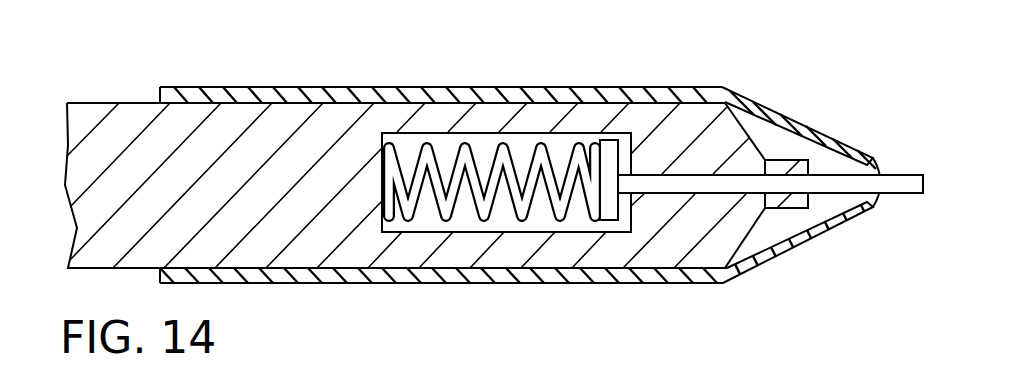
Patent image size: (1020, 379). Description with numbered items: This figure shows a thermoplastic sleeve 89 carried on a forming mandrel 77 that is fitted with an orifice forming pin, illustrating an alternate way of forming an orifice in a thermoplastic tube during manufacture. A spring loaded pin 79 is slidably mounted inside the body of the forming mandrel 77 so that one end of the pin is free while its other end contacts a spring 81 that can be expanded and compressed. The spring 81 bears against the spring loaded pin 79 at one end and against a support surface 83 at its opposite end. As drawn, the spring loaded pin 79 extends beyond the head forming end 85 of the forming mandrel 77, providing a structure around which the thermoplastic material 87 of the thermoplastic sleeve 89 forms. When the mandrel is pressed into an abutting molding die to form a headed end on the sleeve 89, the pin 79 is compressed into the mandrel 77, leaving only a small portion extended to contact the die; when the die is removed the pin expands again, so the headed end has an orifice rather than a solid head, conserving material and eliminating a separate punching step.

The forming mandrel 77 is at (120, 122).
The spring loaded pin 79 is at (895, 188).
The spring 81 is at (542, 148).
The support surface 83 is at (393, 137).
The head forming end 85 is at (742, 157).
The thermoplastic material 87 is at (878, 223).
The thermoplastic sleeve 89 is at (278, 87).